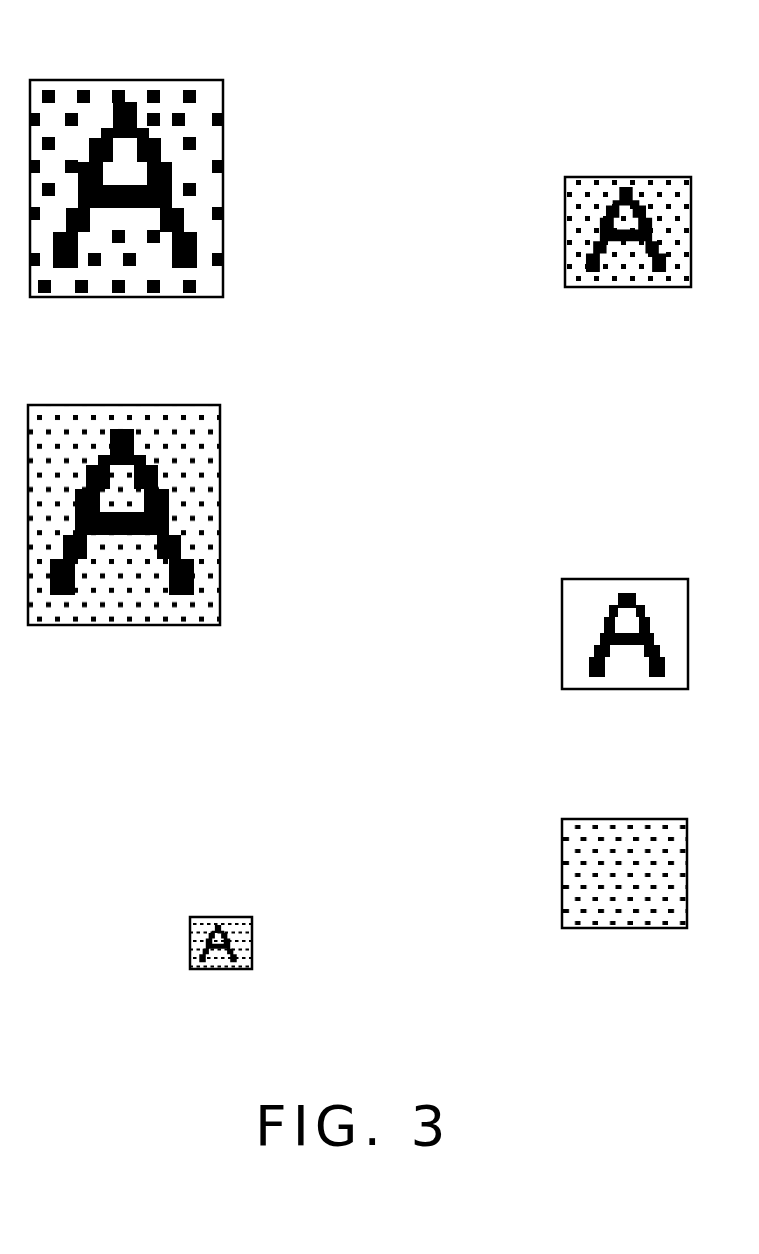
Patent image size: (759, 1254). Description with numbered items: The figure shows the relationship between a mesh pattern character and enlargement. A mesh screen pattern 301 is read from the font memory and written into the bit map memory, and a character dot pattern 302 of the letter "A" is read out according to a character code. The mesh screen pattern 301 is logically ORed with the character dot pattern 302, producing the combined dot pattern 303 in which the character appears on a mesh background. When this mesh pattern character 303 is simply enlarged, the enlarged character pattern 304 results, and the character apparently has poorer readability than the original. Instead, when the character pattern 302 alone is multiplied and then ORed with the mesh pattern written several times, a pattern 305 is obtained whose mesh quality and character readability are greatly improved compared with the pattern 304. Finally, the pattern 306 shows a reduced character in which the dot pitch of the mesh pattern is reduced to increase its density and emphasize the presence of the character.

The mesh screen pattern 301 is at (562, 884).
The character dot pattern 302 is at (562, 627).
The dot pattern 303 is at (565, 238).
The enlarged character pattern 304 is at (89, 79).
The pattern 305 is at (82, 405).
The reduced character pattern 306 is at (190, 945).